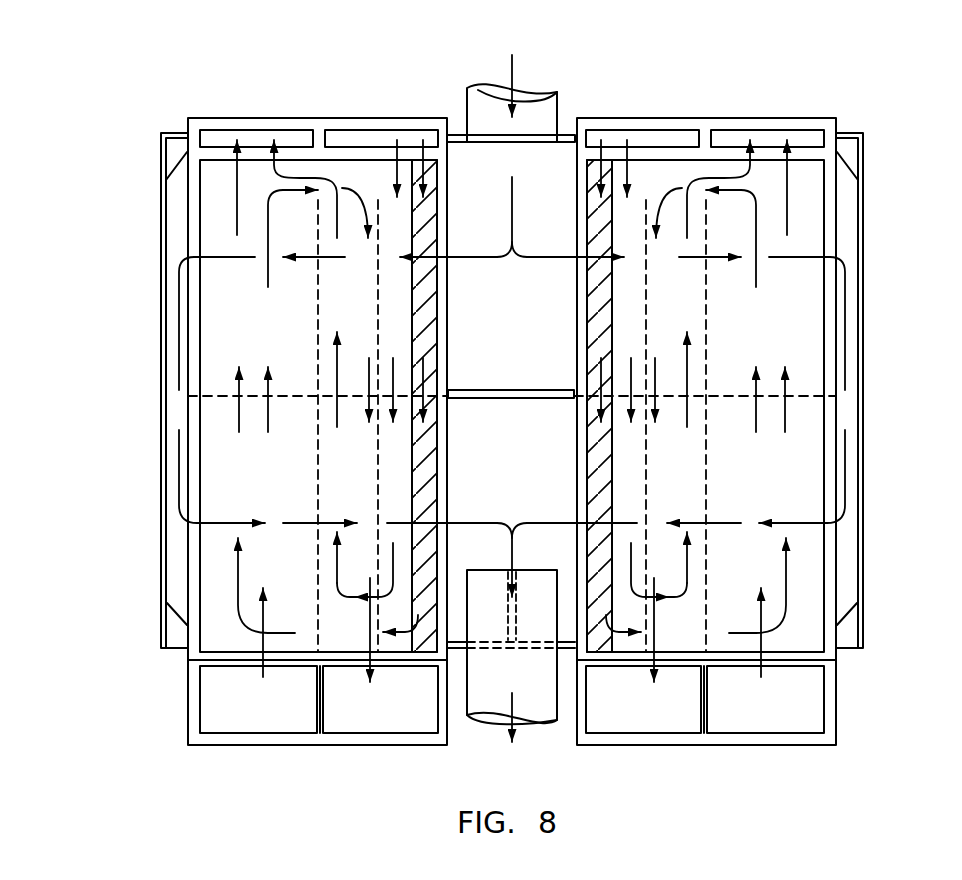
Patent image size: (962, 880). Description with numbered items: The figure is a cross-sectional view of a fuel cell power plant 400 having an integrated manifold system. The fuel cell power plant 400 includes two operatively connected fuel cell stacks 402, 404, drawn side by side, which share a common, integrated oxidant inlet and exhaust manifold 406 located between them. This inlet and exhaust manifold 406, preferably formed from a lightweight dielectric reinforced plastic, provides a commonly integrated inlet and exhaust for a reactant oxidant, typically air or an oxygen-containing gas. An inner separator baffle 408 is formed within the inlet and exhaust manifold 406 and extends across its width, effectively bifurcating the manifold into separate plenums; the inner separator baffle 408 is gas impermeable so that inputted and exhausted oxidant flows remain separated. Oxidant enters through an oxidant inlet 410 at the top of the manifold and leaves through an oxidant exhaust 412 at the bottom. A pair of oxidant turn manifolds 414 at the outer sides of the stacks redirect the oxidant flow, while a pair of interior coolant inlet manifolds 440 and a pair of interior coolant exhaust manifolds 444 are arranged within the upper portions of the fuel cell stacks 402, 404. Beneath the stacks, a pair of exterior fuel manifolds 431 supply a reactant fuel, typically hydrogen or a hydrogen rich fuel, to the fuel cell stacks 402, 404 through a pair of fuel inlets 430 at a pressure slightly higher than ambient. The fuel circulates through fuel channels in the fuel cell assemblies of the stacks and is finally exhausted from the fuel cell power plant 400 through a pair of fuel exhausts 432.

The fuel cell power plant 400 is at (197, 85).
The fuel cell stack 402 is at (314, 100).
The fuel cell stack 404 is at (768, 105).
The integrated oxidant inlet and exhaust manifold 406 is at (565, 131).
The inner separator baffle 408 is at (518, 388).
The oxidant inlet 410 is at (533, 77).
The oxidant exhaust 412 is at (545, 740).
The oxidant turn manifold 414 is at (146, 243).
The fuel inlet 430 is at (262, 715).
The exterior fuel manifold 431 is at (318, 752).
The fuel exhaust 432 is at (385, 715).
The interior coolant inlet manifold 440 is at (385, 132).
The interior coolant exhaust manifold 444 is at (255, 132).